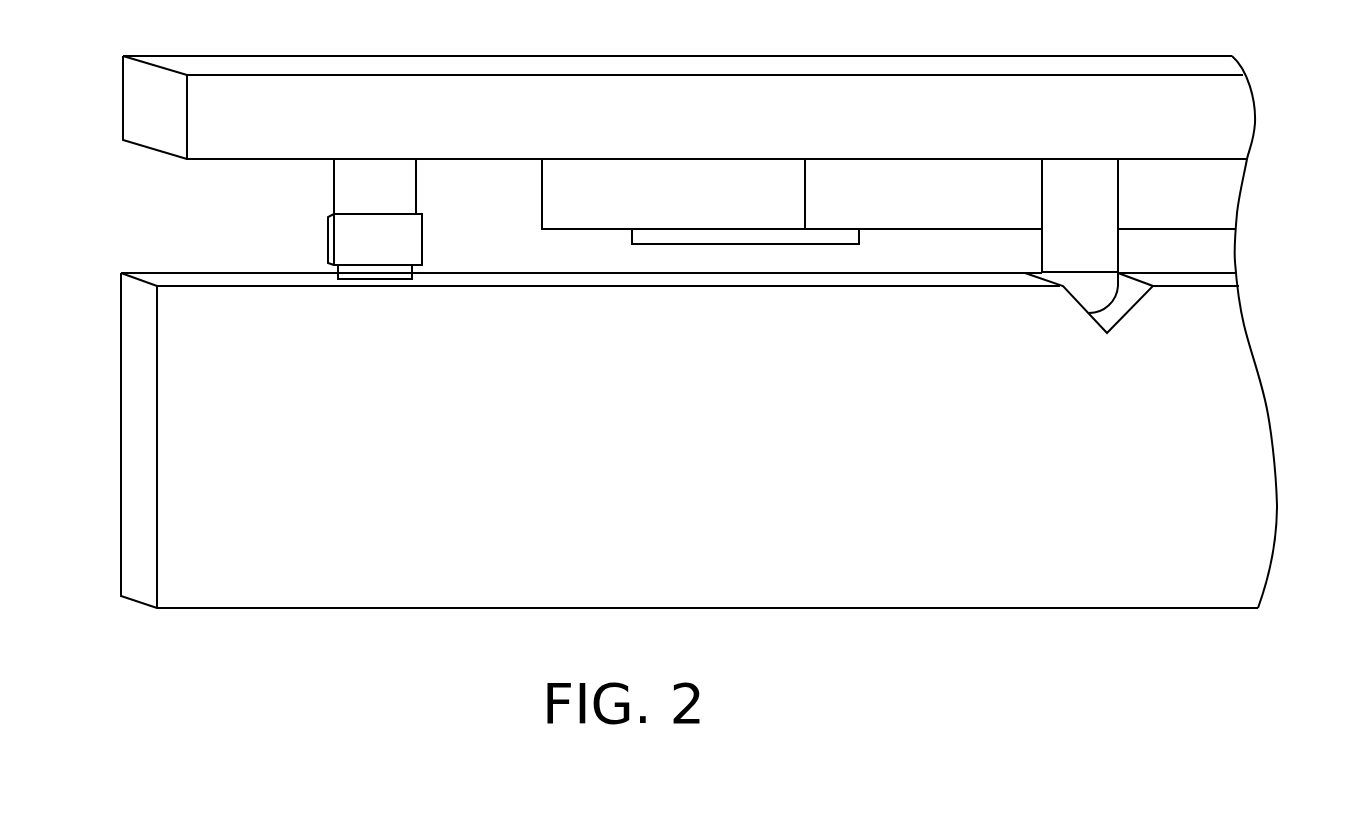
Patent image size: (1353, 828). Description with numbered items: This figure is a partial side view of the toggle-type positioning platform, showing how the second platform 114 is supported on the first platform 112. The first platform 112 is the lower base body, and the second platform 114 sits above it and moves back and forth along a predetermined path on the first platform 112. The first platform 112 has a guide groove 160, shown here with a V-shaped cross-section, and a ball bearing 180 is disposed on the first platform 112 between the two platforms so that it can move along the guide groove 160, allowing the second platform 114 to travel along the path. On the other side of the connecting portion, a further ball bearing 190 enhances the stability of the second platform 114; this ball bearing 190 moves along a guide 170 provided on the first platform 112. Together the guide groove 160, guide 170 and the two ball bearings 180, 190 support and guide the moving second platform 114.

The first platform 112 is at (1253, 445).
The second platform 114 is at (1245, 120).
The guide groove 160 is at (1132, 308).
The guide 170 is at (349, 245).
The ball bearing 180 is at (1103, 251).
The ball bearing 190 is at (356, 193).